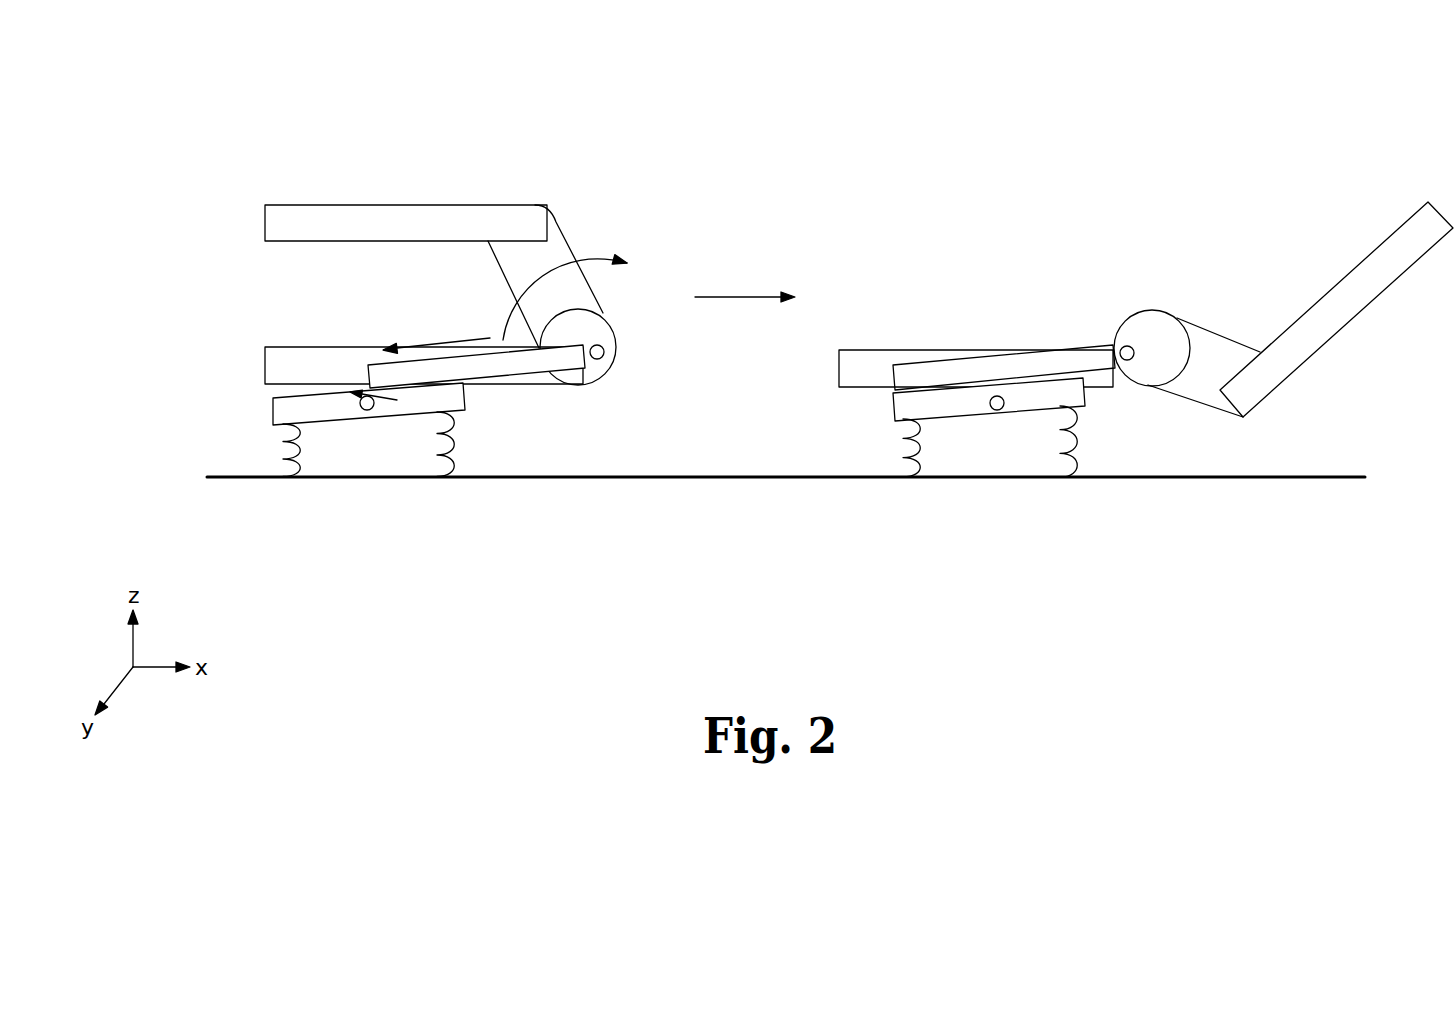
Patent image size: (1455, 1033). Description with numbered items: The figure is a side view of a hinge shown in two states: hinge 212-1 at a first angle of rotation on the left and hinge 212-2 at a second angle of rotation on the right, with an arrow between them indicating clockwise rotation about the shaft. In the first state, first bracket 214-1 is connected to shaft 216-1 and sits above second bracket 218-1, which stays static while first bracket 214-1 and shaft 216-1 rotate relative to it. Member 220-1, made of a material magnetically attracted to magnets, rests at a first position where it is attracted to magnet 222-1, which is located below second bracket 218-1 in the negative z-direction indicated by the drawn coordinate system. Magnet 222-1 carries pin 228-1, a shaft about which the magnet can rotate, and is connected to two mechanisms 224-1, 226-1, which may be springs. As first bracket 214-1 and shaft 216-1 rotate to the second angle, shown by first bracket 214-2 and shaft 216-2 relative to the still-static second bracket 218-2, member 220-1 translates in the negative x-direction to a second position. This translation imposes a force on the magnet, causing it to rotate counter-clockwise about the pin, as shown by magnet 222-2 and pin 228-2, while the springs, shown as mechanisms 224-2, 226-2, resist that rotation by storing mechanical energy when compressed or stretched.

The hinge at first angle of rotation 212-1 is at (200, 158).
The hinge at second angle of rotation 212-2 is at (937, 160).
The first bracket 214-1 is at (435, 218).
The first bracket 214-2 is at (1333, 308).
The shaft 216-1 is at (585, 372).
The shaft 216-2 is at (1145, 322).
The second bracket 218-1 is at (293, 353).
The second bracket 218-2 is at (872, 357).
The member 220-1 is at (488, 367).
The magnet 222-1 is at (278, 410).
The magnet 222-2 is at (900, 403).
The mechanism 224-1 is at (293, 463).
The mechanism 224-2 is at (922, 462).
The mechanism 226-1 is at (447, 467).
The mechanism 226-2 is at (1082, 460).
The pin 228-1 is at (370, 410).
The pin 228-2 is at (997, 410).